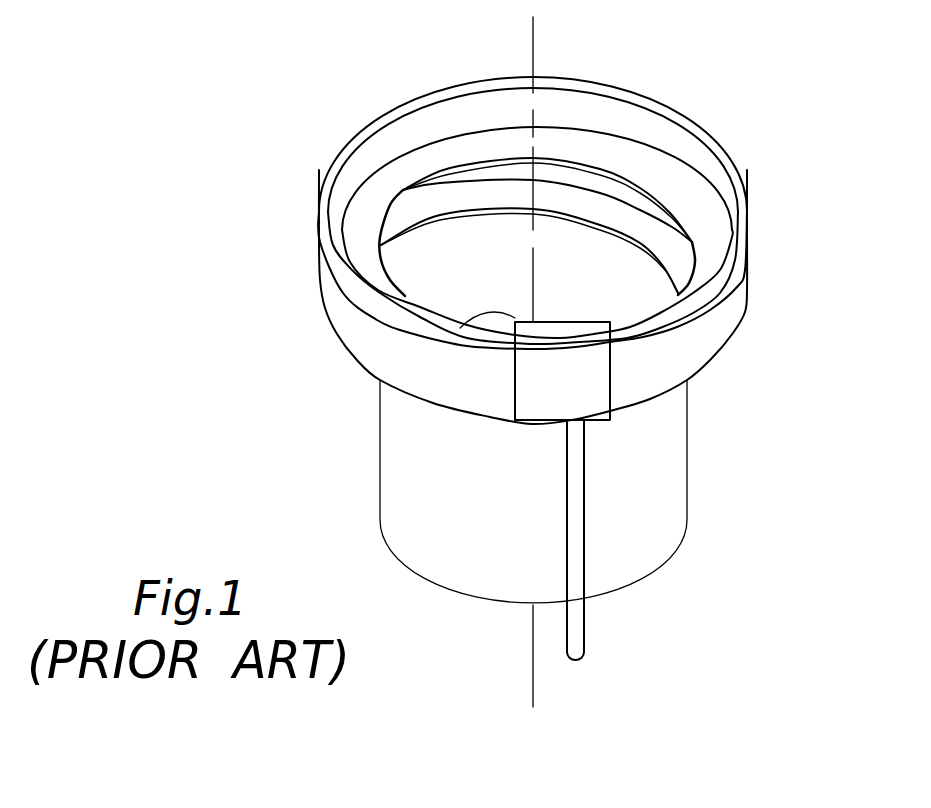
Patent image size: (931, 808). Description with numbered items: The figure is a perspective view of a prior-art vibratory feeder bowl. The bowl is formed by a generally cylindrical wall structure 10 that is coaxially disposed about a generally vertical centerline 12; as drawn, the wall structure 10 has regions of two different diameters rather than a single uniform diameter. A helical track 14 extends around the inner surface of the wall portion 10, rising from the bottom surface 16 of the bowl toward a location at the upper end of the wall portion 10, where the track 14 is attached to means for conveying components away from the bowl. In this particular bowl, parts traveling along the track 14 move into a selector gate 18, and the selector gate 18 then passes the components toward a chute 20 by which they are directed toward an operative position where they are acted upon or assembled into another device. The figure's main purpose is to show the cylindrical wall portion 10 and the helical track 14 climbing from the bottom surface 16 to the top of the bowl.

The cylindrical wall structure 10 is at (748, 253).
The vertical centerline 12 is at (533, 50).
The helical track 14 is at (613, 160).
The bottom surface 16 is at (493, 310).
The selector gate 18 is at (592, 321).
The chute 20 is at (567, 515).